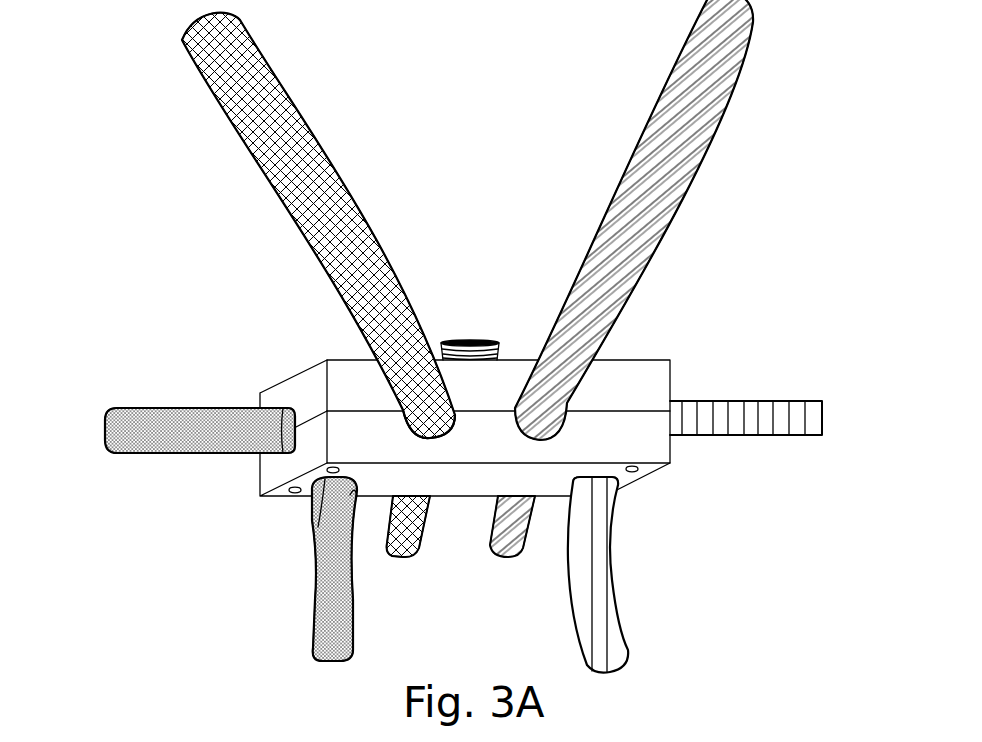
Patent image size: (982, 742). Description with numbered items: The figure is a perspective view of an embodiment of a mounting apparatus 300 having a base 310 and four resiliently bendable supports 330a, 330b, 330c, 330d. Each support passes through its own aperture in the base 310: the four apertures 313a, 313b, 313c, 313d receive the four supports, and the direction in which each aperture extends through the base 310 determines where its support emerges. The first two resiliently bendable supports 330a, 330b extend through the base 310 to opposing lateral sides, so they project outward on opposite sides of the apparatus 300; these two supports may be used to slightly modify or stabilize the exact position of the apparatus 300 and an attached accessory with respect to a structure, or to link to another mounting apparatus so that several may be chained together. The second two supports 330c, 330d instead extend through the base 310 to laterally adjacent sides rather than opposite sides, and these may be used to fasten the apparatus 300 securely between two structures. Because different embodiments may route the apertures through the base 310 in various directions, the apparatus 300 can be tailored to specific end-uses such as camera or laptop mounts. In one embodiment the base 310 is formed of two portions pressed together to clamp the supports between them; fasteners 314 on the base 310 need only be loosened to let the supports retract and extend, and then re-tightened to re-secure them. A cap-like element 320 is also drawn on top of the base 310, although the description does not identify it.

The mounting apparatus 300 is at (106, 113).
The base 310 is at (260, 388).
The aperture 313a is at (543, 420).
The aperture 313b is at (420, 416).
The aperture 313c is at (290, 420).
The aperture 313d is at (570, 513).
The fastener 314 is at (330, 475).
The cap 320 is at (463, 340).
The resiliently bendable support 330a is at (612, 235).
The resiliently bendable support 330b is at (347, 217).
The resiliently bendable support 330c is at (195, 443).
The resiliently bendable support 330d is at (770, 425).